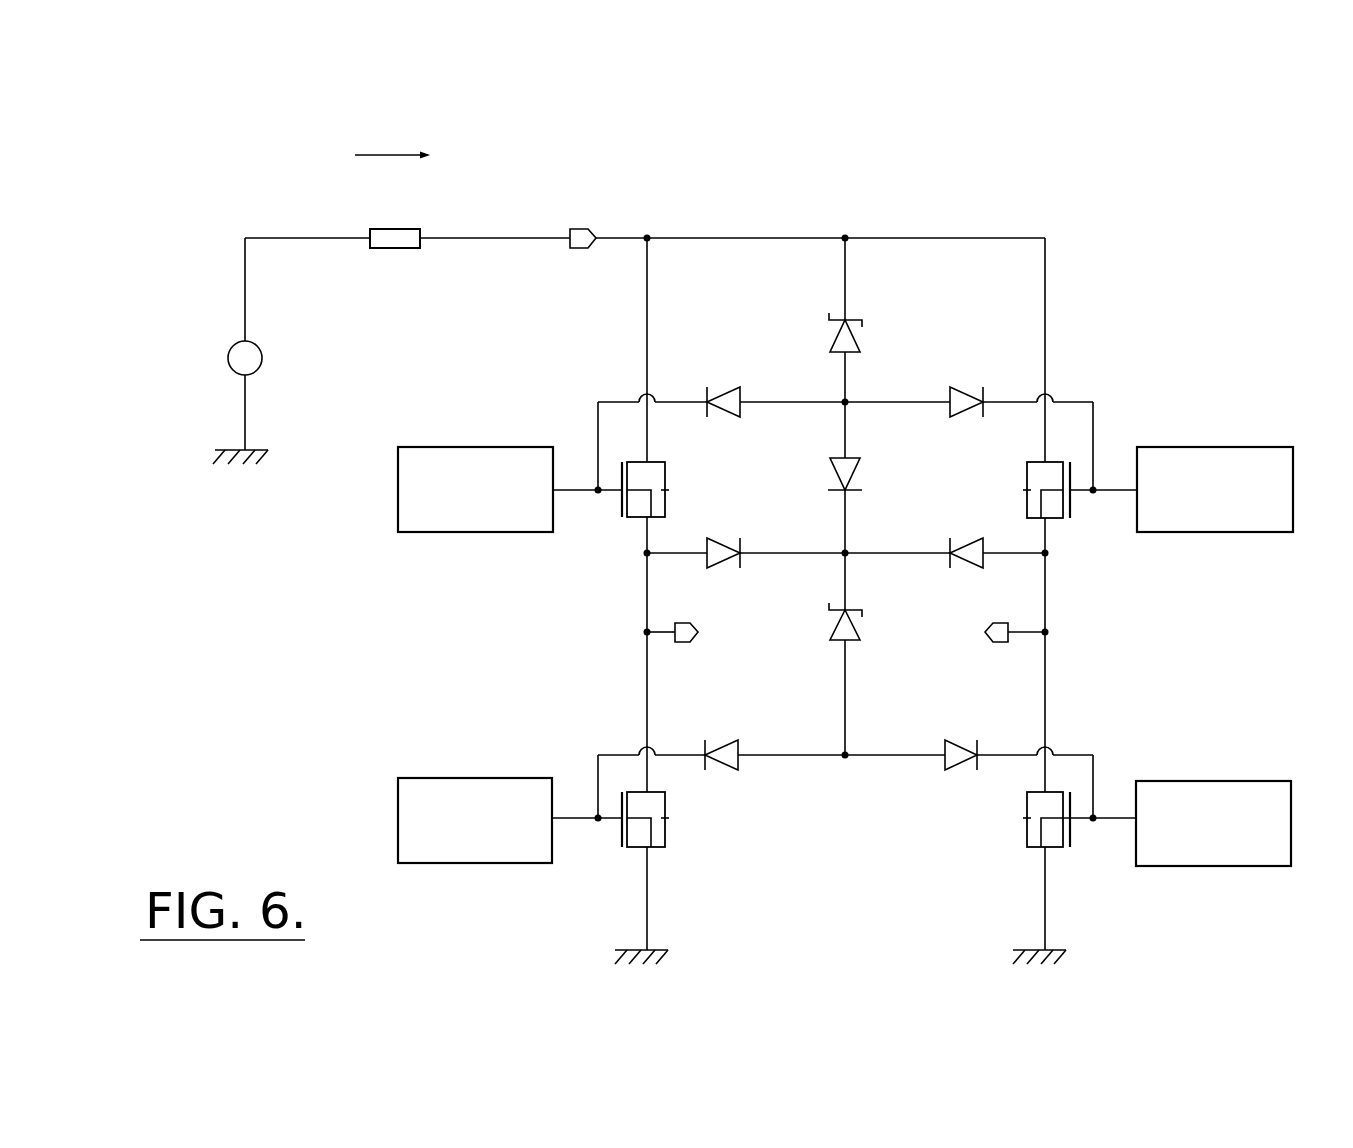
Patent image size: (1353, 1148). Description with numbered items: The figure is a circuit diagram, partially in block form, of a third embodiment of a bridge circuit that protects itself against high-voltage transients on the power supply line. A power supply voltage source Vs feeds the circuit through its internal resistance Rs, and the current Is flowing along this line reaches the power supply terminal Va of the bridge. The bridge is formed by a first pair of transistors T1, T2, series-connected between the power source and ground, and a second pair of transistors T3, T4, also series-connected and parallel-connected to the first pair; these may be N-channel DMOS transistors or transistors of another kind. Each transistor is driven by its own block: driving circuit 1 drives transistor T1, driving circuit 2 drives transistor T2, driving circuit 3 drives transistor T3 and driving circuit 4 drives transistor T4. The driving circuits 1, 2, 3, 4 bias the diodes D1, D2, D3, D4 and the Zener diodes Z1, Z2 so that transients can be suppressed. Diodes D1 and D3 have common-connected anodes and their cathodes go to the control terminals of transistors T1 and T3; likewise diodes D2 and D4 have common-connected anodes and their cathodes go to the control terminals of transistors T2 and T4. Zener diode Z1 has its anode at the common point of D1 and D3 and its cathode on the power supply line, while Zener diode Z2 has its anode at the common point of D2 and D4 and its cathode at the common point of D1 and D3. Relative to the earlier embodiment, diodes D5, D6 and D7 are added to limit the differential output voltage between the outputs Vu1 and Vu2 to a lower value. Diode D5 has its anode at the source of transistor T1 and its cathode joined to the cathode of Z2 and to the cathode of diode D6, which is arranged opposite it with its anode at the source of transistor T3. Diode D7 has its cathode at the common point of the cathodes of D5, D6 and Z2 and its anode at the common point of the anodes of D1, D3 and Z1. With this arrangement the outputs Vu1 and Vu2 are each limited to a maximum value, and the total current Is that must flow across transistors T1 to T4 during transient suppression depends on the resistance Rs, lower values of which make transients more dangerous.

The driving circuit 1 is at (398, 487).
The driving circuit 2 is at (398, 818).
The driving circuit 3 is at (1241, 489).
The driving circuit 4 is at (1240, 823).
The transistor T1 is at (656, 479).
The transistor T2 is at (661, 816).
The transistor T3 is at (1031, 479).
The transistor T4 is at (1023, 816).
The diode D1 is at (723, 387).
The diode D2 is at (723, 740).
The diode D3 is at (966, 387).
The diode D4 is at (967, 740).
The diode D5 is at (723, 540).
The diode D6 is at (966, 540).
The diode D7 is at (857, 460).
The Zener diode Z1 is at (824, 324).
The Zener diode Z2 is at (824, 609).
The internal resistance Rs is at (395, 217).
The power supply voltage source Vs is at (234, 351).
The power supply terminal Va is at (582, 217).
The output Vu1 is at (678, 615).
The output Vu2 is at (1015, 615).
The total current Is is at (392, 138).